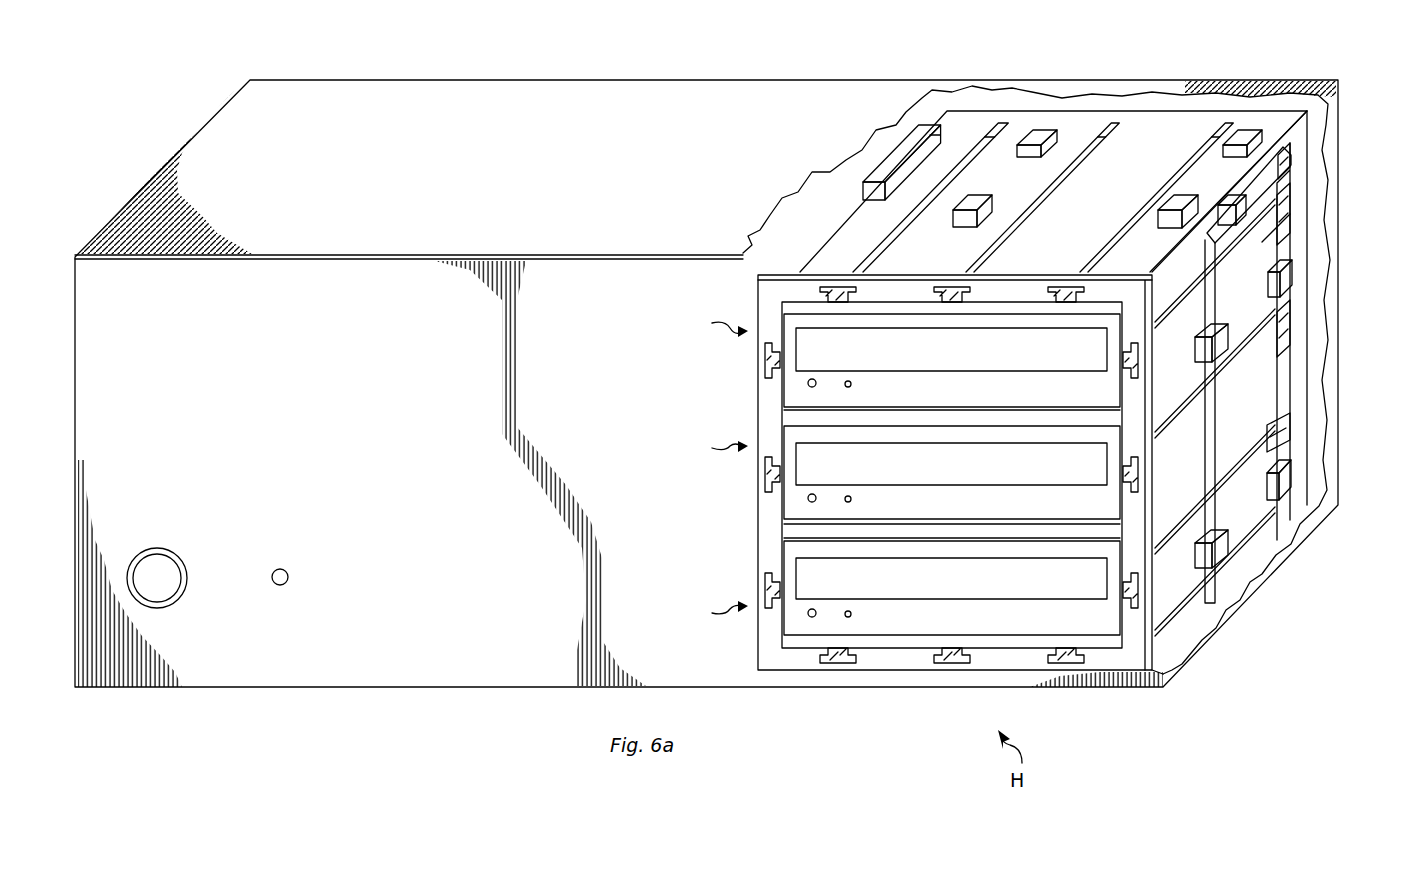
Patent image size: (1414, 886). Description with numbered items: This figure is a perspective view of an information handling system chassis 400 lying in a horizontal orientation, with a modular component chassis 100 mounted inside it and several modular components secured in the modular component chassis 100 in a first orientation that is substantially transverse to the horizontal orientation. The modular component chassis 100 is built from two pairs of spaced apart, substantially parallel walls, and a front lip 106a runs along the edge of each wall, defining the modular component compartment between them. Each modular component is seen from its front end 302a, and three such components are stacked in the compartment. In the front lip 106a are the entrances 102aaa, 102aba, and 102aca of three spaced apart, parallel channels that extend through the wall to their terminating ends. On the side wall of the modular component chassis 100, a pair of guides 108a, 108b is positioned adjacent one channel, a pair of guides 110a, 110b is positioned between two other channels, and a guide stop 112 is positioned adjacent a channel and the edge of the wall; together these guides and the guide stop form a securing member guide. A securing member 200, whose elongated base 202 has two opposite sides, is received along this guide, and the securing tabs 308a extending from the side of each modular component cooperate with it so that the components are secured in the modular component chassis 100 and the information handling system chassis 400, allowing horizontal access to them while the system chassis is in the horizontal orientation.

The information handling system chassis 400 is at (527, 170).
The modular component chassis 100 is at (824, 201).
The guide stop 112 is at (1283, 168).
The securing tab 308a is at (1283, 200).
The elongated base 202 is at (1262, 242).
The guide 110b is at (1283, 273).
The securing member 200 is at (1280, 359).
The guide 110a is at (1220, 342).
The guide 108a is at (1197, 556).
The guide 108b is at (1287, 473).
The front lip 106a is at (768, 298).
The front end 302a is at (795, 392).
The entrance 102aaa is at (768, 352).
The entrance 102aba is at (768, 468).
The entrance 102aca is at (768, 590).